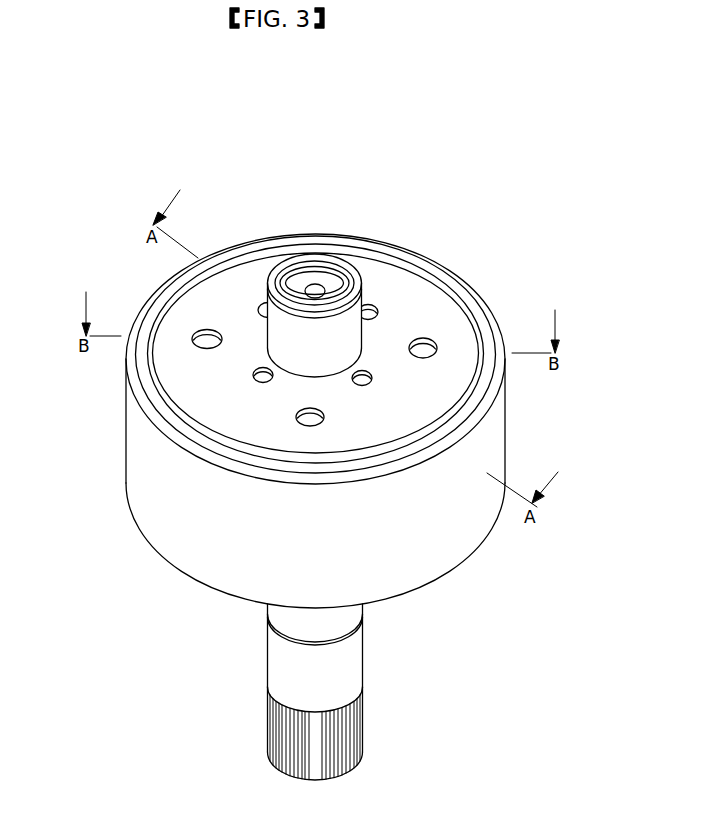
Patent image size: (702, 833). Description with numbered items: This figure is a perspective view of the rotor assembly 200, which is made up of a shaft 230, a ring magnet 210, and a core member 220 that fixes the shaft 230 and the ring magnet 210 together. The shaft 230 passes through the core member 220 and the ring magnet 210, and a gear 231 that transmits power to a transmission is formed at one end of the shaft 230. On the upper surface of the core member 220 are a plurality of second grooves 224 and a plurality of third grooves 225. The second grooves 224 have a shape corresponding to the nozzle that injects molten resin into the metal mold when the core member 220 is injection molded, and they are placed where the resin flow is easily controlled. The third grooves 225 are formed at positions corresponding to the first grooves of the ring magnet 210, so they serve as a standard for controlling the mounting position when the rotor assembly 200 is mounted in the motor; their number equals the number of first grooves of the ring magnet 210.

The rotor assembly 200 is at (240, 150).
The ring magnet 210 is at (412, 560).
The core member 220 is at (425, 287).
The second grooves 224 is at (257, 366).
The third grooves 225 is at (420, 347).
The shaft 230 is at (345, 665).
The gear 231 is at (365, 738).